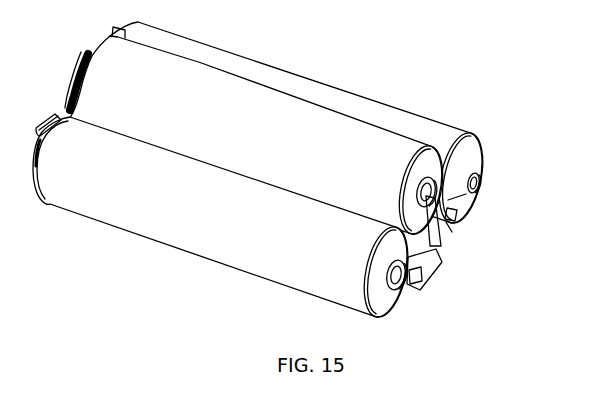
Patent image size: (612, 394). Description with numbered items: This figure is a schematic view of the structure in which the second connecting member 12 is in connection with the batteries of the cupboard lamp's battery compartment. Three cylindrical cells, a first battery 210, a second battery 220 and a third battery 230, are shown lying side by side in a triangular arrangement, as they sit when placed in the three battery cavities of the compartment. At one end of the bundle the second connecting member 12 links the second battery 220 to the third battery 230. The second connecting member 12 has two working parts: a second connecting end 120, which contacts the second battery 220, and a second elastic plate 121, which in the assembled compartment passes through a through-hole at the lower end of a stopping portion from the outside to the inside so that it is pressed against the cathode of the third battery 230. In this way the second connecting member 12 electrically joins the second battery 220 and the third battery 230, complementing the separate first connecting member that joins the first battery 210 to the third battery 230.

The first battery 210 is at (255, 253).
The second battery 220 is at (483, 89).
The third battery 230 is at (247, 125).
The second connecting end 120 is at (480, 178).
The second connecting member 12 is at (460, 228).
The second elastic plate 121 is at (432, 243).